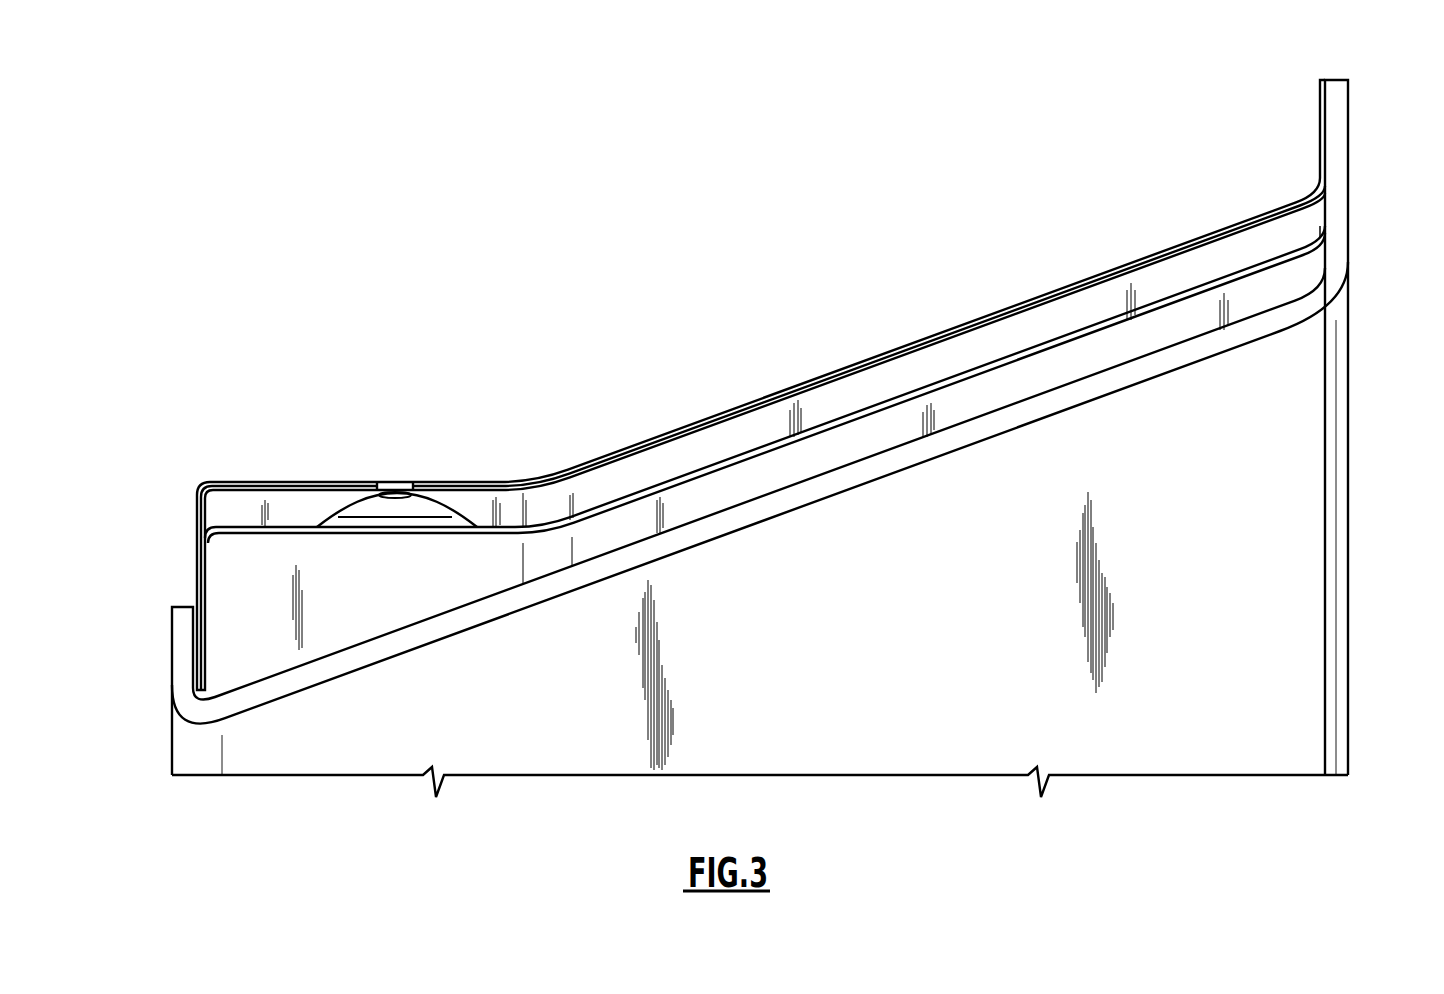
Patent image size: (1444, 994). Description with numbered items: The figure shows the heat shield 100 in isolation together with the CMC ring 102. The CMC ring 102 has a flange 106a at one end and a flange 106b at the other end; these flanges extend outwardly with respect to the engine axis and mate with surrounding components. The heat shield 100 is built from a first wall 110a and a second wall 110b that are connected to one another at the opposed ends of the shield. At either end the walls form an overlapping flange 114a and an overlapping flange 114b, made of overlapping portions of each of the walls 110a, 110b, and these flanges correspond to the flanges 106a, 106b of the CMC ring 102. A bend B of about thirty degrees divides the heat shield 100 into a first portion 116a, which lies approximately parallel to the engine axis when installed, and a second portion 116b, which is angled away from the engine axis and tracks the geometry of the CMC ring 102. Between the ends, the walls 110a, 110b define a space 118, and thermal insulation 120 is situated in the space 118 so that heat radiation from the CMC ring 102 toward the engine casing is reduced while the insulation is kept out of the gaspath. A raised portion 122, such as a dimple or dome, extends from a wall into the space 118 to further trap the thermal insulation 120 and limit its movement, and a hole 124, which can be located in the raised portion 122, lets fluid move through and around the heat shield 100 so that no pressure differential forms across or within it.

The heat shield 100 is at (662, 360).
The CMC ring 102 is at (428, 634).
The flange 106a is at (174, 660).
The flange 106b is at (1344, 177).
The first wall 110a is at (765, 403).
The second wall 110b is at (699, 385).
The overlapping flange 114a is at (174, 575).
The overlapping flange 114b is at (1290, 153).
The first portion 116a is at (400, 345).
The second portion 116b is at (963, 297).
The space 118 is at (822, 395).
The thermal insulation 120 is at (765, 430).
The raised portion 122 is at (424, 508).
The hole 124 is at (399, 452).
The bend B is at (548, 440).